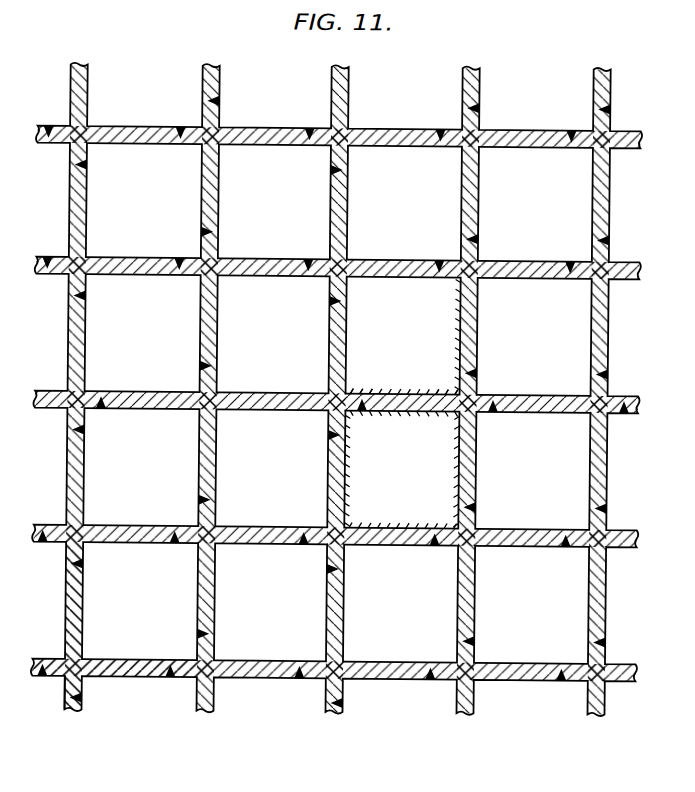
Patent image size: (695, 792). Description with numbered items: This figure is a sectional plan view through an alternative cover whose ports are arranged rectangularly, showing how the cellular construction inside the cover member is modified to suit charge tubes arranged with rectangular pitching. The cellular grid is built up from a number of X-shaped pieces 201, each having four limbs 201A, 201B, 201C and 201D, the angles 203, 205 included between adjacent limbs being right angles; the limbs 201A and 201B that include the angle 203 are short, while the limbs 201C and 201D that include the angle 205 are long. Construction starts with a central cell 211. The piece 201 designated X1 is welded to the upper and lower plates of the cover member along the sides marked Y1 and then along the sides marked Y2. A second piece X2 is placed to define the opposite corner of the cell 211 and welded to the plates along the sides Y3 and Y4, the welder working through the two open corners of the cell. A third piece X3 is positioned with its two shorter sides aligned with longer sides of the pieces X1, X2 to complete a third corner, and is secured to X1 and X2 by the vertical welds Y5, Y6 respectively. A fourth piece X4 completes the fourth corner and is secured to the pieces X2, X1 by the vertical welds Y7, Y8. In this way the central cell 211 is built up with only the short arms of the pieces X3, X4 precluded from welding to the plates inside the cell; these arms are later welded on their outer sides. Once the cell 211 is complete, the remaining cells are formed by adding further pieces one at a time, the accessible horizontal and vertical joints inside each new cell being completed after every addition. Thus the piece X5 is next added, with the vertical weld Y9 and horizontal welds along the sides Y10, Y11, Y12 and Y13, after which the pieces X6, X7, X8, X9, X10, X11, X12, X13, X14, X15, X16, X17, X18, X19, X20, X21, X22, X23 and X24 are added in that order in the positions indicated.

The X-shaped piece 201 is at (245, 130).
The limb 201A is at (81, 681).
The limb 201B is at (59, 661).
The limb 201C is at (77, 598).
The limb 201D is at (146, 667).
The angle 203 is at (65, 675).
The angle 205 is at (85, 659).
The central cell 211 is at (401, 479).
The piece X1 is at (458, 414).
The piece X2 is at (328, 547).
The piece X3 is at (459, 547).
The piece X4 is at (327, 413).
The piece X5 is at (444, 277).
The piece X6 is at (329, 275).
The piece X7 is at (200, 413).
The piece X8 is at (201, 541).
The piece X9 is at (330, 680).
The piece X10 is at (461, 679).
The piece X11 is at (593, 541).
The piece X12 is at (595, 411).
The piece X13 is at (587, 280).
The piece X14 is at (595, 143).
The piece X15 is at (455, 146).
The piece X16 is at (338, 140).
The piece X17 is at (194, 276).
The piece X18 is at (196, 146).
The piece X19 is at (71, 275).
The piece X20 is at (74, 138).
The piece X21 is at (65, 408).
The piece X22 is at (78, 540).
The piece X23 is at (51, 685).
The piece X24 is at (200, 675).
The side Y1 is at (397, 411).
The side Y2 is at (459, 475).
The side Y3 is at (349, 485).
The side Y4 is at (381, 527).
The vertical weld Y5 is at (473, 499).
The vertical weld Y6 is at (431, 546).
The vertical weld Y7 is at (330, 437).
The vertical weld Y8 is at (363, 395).
The vertical weld Y9 is at (473, 377).
The side Y10 is at (403, 336).
The side Y11 is at (454, 342).
The side Y12 is at (458, 391).
The side Y13 is at (408, 392).